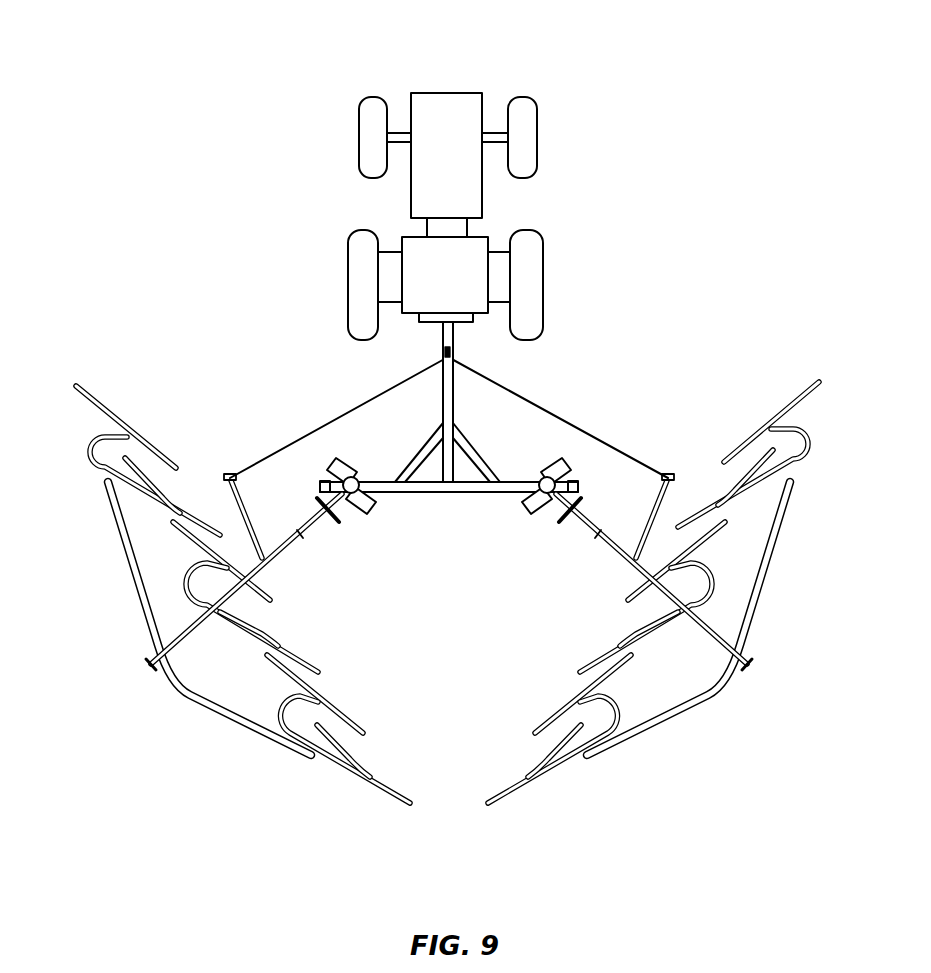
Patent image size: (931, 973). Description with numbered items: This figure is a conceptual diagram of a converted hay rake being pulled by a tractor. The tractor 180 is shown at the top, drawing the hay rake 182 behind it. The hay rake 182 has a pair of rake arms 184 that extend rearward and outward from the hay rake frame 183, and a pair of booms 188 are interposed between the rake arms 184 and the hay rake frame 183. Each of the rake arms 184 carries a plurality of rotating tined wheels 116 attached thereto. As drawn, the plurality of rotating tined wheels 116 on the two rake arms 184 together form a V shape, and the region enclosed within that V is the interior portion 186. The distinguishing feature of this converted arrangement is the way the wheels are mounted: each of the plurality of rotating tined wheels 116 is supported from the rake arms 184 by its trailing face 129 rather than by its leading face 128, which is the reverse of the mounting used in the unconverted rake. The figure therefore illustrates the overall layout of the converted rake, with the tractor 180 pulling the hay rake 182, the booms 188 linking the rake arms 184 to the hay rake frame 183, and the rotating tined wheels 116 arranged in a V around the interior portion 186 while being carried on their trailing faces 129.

The rotating tined wheel 116 is at (455, 429).
The leading face 128 is at (93, 397).
The trailing face 129 is at (88, 408).
The tractor 180 is at (415, 92).
The hay rake 182 is at (473, 440).
The hay rake frame 183 is at (573, 483).
The rake arm 184 is at (132, 568).
The interior portion 186 is at (470, 661).
The boom 188 is at (303, 540).